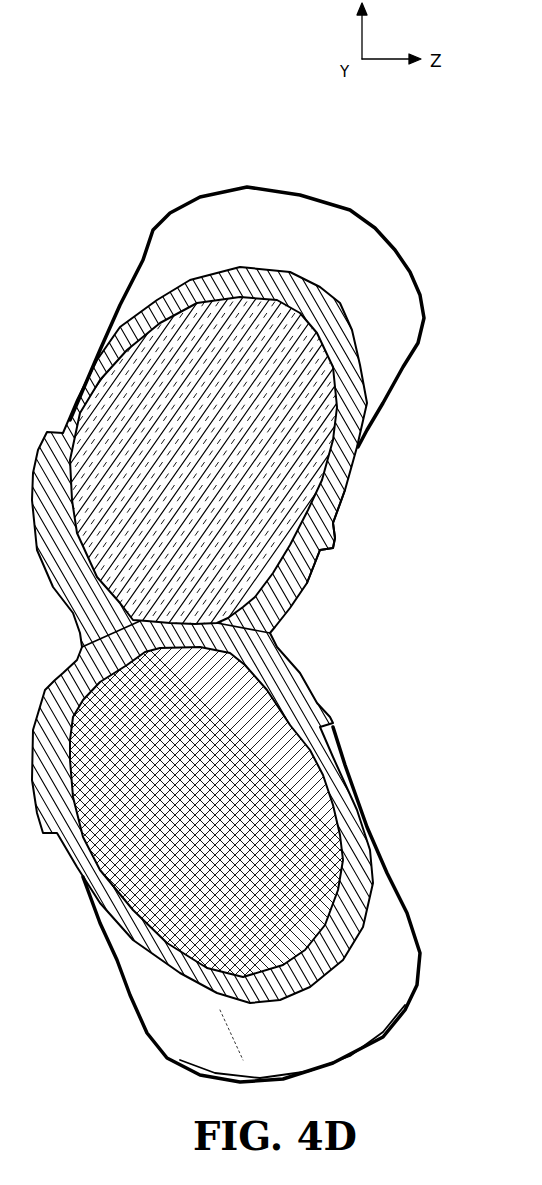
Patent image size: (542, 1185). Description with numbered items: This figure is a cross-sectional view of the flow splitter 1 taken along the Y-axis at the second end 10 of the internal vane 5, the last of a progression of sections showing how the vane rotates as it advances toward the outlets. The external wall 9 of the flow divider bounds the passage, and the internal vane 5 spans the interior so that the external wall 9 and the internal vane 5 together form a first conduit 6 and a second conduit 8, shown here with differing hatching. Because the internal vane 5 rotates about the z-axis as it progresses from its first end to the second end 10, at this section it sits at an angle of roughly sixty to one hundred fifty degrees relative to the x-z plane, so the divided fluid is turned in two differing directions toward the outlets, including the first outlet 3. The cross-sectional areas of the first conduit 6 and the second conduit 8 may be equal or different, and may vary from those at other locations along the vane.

The flow splitter 1 is at (222, 135).
The first outlet 3 is at (347, 212).
The internal vane 5 is at (152, 657).
The first conduit 6 is at (149, 449).
The second conduit 8 is at (223, 765).
The external wall 9 is at (300, 563).
The second end 10 is at (173, 640).